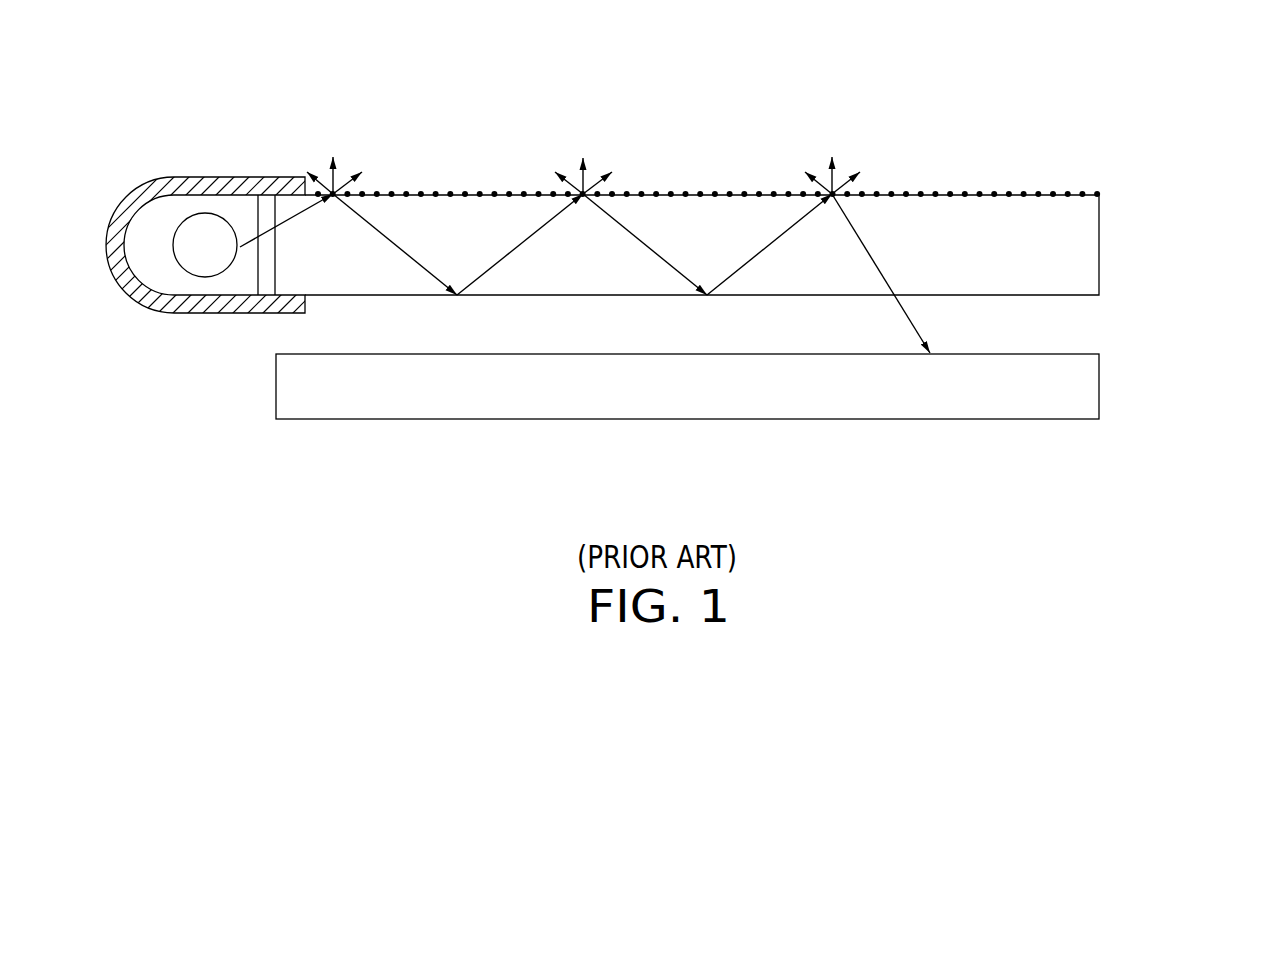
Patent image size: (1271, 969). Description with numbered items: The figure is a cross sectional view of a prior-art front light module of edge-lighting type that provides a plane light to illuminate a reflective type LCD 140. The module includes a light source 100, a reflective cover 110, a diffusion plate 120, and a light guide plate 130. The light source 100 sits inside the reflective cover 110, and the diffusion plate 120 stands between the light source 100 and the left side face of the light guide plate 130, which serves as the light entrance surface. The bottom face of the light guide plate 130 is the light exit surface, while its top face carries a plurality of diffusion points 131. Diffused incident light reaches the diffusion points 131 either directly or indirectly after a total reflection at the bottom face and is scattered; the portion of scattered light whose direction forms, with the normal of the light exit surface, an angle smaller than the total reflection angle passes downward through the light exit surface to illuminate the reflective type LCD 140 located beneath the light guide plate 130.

The light source 100 is at (190, 252).
The reflective cover 110 is at (138, 195).
The diffusion plate 120 is at (265, 268).
The light guide plate 130 is at (1067, 250).
The diffusion points 131 is at (465, 193).
The reflective type LCD 140 is at (1073, 388).